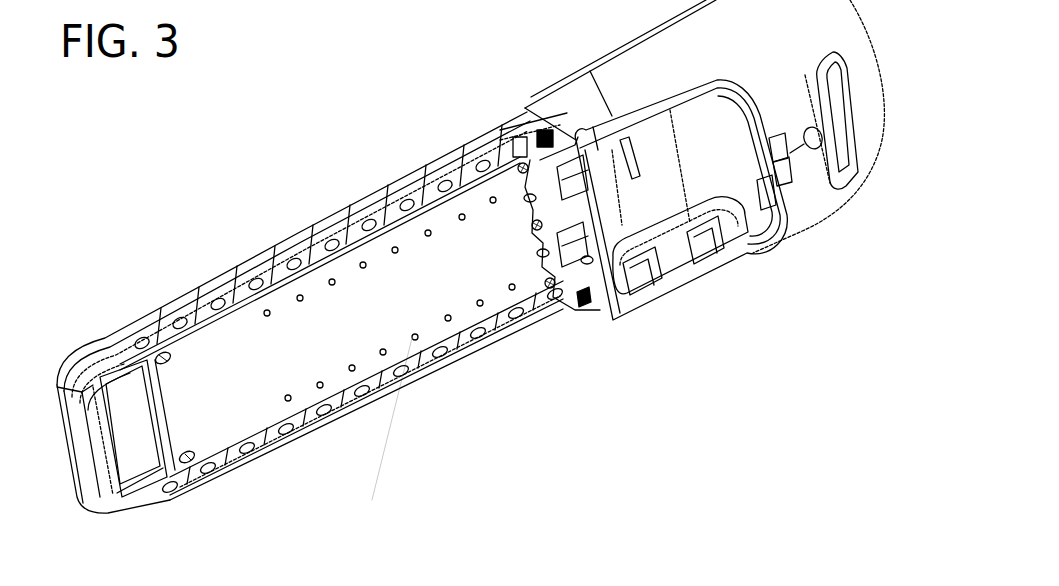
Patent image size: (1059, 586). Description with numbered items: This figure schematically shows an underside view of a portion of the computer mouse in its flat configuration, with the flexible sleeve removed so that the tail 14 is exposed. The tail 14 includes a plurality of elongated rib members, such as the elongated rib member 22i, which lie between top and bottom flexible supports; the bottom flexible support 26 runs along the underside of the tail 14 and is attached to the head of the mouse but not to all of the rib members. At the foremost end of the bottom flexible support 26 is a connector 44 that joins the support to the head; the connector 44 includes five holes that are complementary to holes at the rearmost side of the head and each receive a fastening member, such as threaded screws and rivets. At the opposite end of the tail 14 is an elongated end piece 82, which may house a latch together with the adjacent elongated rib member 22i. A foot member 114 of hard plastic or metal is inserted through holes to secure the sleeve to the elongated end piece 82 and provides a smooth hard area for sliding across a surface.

The tail 14 is at (323, 214).
The elongated rib member 22i is at (177, 294).
The elongated end piece 82 is at (124, 322).
The bottom flexible support 26 is at (245, 387).
The connector 44 is at (525, 210).
The foot member 114 is at (80, 450).